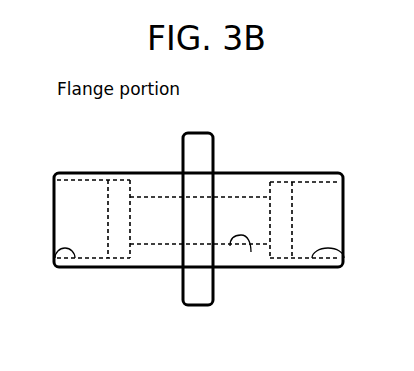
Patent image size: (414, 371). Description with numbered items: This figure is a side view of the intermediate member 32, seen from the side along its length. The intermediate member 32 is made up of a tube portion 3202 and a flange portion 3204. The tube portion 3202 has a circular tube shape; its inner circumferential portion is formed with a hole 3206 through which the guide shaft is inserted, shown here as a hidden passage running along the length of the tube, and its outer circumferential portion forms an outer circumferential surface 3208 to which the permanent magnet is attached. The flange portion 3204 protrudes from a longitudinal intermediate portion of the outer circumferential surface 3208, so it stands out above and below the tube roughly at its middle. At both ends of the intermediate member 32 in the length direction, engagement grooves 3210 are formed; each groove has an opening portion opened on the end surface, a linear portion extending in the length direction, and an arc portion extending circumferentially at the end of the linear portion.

The intermediate member 32 is at (284, 112).
The tube portion 3202 is at (250, 173).
The outer circumferential surface 3208 is at (198, 220).
The flange portion 3204 is at (214, 152).
The hole 3206 is at (251, 252).
The engagement groove 3210 is at (53, 263).